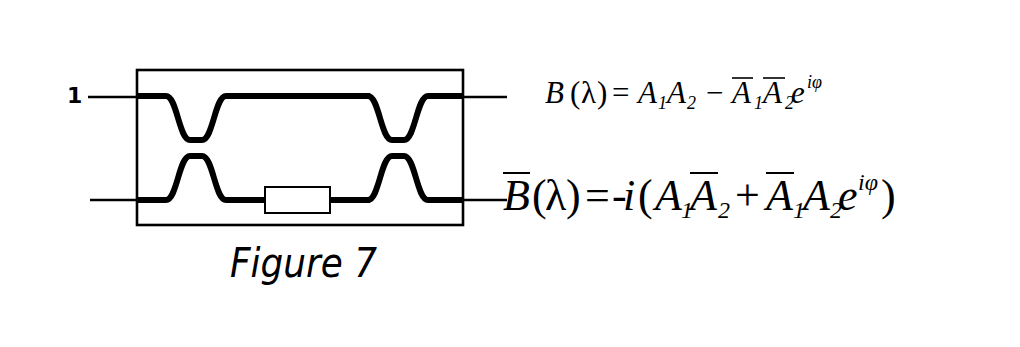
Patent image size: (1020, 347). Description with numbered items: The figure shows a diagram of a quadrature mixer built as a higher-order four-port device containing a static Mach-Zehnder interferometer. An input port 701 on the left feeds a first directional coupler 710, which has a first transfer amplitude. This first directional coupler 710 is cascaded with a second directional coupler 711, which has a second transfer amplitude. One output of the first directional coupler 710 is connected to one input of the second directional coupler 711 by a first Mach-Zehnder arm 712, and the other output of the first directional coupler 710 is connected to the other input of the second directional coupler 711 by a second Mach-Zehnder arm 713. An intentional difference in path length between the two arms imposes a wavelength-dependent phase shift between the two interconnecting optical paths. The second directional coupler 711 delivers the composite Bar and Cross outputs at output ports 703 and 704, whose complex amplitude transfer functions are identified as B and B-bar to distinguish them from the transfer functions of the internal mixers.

The input port / input waveguide 701 is at (134, 95).
The first output port 703 is at (492, 65).
The second output port 704 is at (492, 238).
The first directional coupler 710 is at (196, 148).
The second directional coupler 711 is at (406, 110).
The first Mach-Zehnder arm 712 is at (284, 61).
The second Mach-Zehnder arm 713 is at (248, 202).